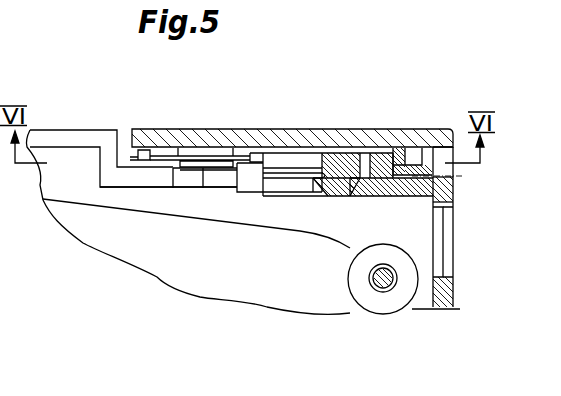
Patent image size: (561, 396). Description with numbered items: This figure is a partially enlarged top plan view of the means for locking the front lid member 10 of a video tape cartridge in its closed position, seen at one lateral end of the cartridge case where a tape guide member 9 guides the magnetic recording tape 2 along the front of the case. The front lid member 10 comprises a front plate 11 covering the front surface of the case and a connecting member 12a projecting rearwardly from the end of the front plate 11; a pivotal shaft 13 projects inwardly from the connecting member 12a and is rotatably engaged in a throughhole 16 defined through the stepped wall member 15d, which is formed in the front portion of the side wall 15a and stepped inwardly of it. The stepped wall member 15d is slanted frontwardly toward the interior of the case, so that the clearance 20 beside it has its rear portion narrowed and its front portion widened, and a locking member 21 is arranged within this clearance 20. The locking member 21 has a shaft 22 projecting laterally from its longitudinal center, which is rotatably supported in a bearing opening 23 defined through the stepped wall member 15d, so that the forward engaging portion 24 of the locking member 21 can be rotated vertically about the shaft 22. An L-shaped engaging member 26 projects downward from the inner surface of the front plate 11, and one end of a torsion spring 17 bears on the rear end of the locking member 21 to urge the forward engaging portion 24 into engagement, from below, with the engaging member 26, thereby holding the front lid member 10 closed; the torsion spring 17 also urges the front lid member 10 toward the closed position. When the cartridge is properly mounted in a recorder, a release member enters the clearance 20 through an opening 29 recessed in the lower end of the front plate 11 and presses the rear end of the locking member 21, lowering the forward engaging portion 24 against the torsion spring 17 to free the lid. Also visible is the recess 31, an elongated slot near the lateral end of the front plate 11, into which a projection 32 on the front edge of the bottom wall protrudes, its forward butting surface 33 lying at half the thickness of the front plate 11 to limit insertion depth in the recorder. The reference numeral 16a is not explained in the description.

The magnetic recording tape 2 is at (182, 219).
The tape guide member 9 is at (388, 304).
The front lid member 10 is at (457, 287).
The front plate 11 is at (442, 309).
The connecting member 12a is at (340, 133).
The pivotal shaft 13 is at (247, 185).
The side wall 15a is at (78, 135).
The stepped wall member 15d is at (153, 182).
The throughhole 16 is at (263, 182).
The slide member projection 16a is at (300, 195).
The torsion spring 17 is at (200, 147).
The clearance 20 is at (161, 150).
The locking member 21 is at (282, 160).
The shaft 22 is at (340, 185).
The bearing opening 23 is at (338, 187).
The forward engaging portion 24 is at (412, 153).
The engaging member 26 is at (398, 172).
The opening 29 is at (450, 153).
The recess 31 is at (447, 210).
The projection 32 is at (437, 253).
The forward butting surface 33 is at (443, 230).